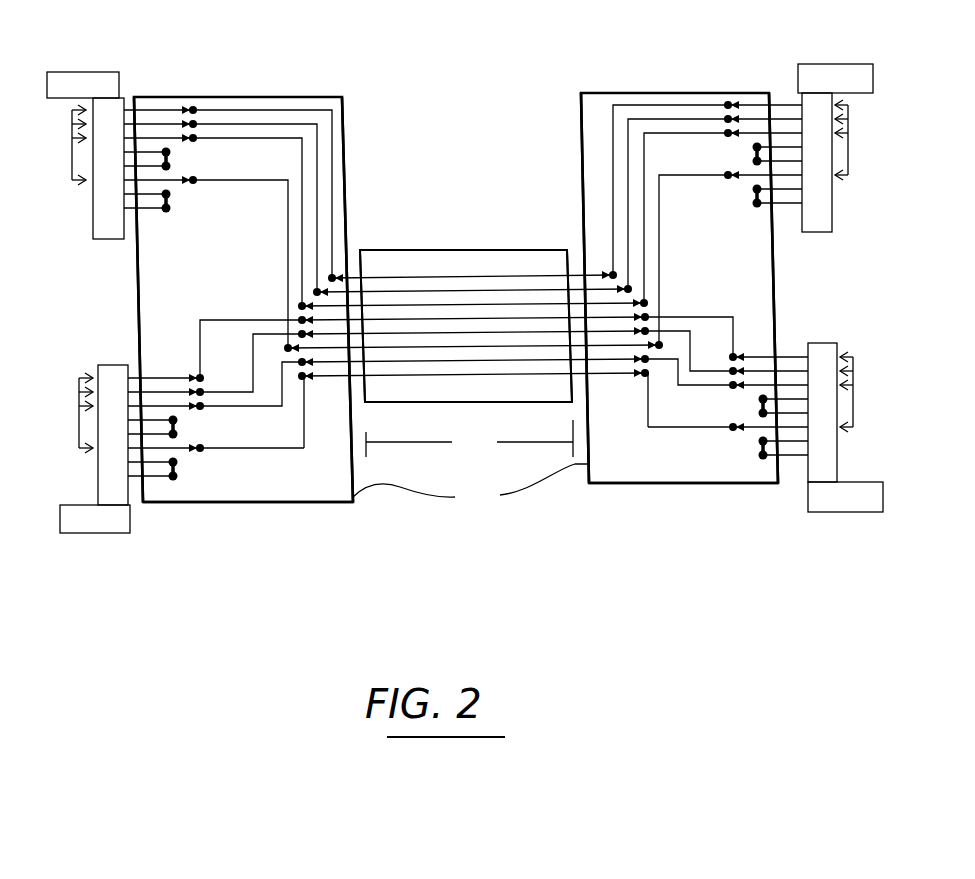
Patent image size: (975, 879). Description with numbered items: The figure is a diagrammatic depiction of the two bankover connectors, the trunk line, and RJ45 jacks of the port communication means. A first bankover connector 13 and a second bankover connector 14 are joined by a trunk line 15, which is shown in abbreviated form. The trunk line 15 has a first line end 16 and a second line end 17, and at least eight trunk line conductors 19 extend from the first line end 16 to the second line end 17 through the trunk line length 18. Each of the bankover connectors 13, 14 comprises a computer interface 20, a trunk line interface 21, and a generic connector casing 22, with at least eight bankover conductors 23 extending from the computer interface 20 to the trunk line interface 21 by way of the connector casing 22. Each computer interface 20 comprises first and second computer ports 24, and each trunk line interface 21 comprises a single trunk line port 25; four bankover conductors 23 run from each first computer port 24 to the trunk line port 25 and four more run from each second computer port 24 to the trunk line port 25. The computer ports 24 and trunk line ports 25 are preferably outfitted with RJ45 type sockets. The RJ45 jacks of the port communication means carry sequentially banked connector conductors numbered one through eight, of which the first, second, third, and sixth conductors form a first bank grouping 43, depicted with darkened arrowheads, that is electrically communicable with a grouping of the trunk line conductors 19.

The first bankover connector 13 is at (341, 96).
The second bankover connector 14 is at (580, 92).
The trunk line 15 is at (488, 249).
The first line end 16 is at (361, 249).
The second line end 17 is at (572, 207).
The trunk line length 18 is at (469, 438).
The trunk line conductors 19 is at (439, 262).
The computer interface 20 is at (137, 302).
The trunk line interface 21 is at (471, 486).
The connector casing 22 is at (283, 486).
The bankover conductors 23 is at (333, 389).
The computer ports 24 is at (138, 90).
The trunk line port 25 is at (351, 233).
The first bank grouping 43 is at (72, 152).